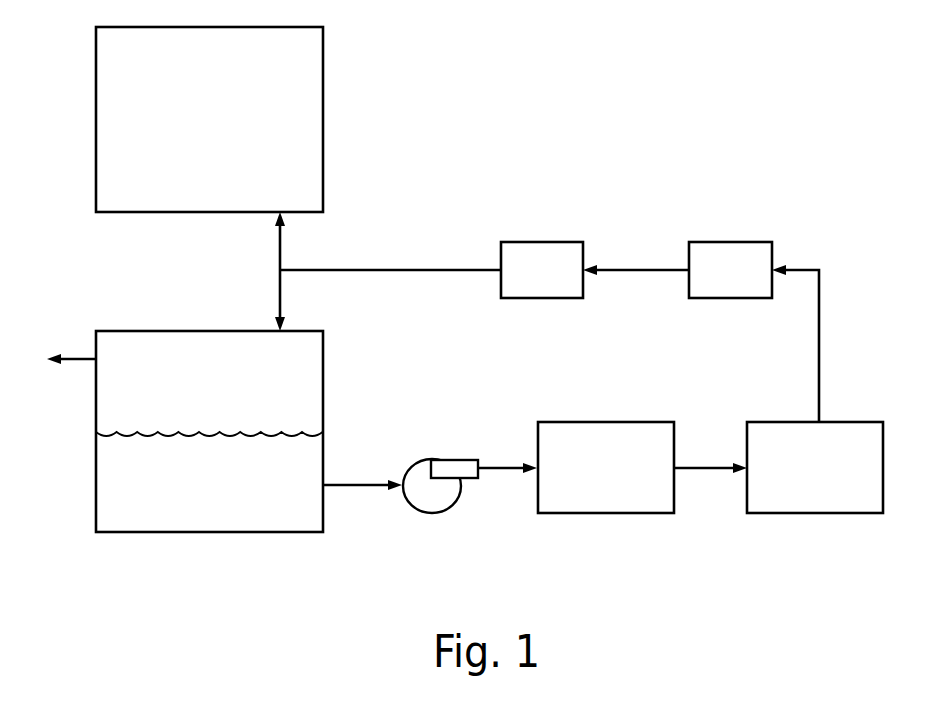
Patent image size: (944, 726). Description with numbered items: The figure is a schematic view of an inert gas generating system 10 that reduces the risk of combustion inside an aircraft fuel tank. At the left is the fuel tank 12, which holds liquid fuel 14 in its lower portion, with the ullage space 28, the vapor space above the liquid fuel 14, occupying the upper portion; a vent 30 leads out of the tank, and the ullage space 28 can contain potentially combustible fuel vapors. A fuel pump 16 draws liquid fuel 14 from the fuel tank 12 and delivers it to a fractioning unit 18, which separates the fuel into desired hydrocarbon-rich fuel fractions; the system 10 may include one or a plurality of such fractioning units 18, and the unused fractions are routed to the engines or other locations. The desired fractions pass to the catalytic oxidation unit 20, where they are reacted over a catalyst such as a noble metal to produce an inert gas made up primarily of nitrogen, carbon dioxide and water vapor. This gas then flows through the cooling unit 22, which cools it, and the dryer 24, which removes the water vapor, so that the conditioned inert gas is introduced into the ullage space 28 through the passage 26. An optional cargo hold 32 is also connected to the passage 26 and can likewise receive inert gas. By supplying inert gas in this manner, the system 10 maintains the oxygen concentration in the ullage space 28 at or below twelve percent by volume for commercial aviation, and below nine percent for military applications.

The inert gas generating system 10 is at (640, 87).
The fuel tank 12 is at (118, 547).
The liquid fuel 14 is at (193, 508).
The fuel pump 16 is at (441, 524).
The fractioning unit 18 is at (593, 480).
The catalytic oxidation unit 20 is at (799, 480).
The cooling unit 22 is at (716, 286).
The dryer 24 is at (529, 286).
The passage 26 is at (430, 262).
The ullage space 28 is at (193, 378).
The vent 30 is at (81, 346).
The cargo hold 32 is at (195, 132).